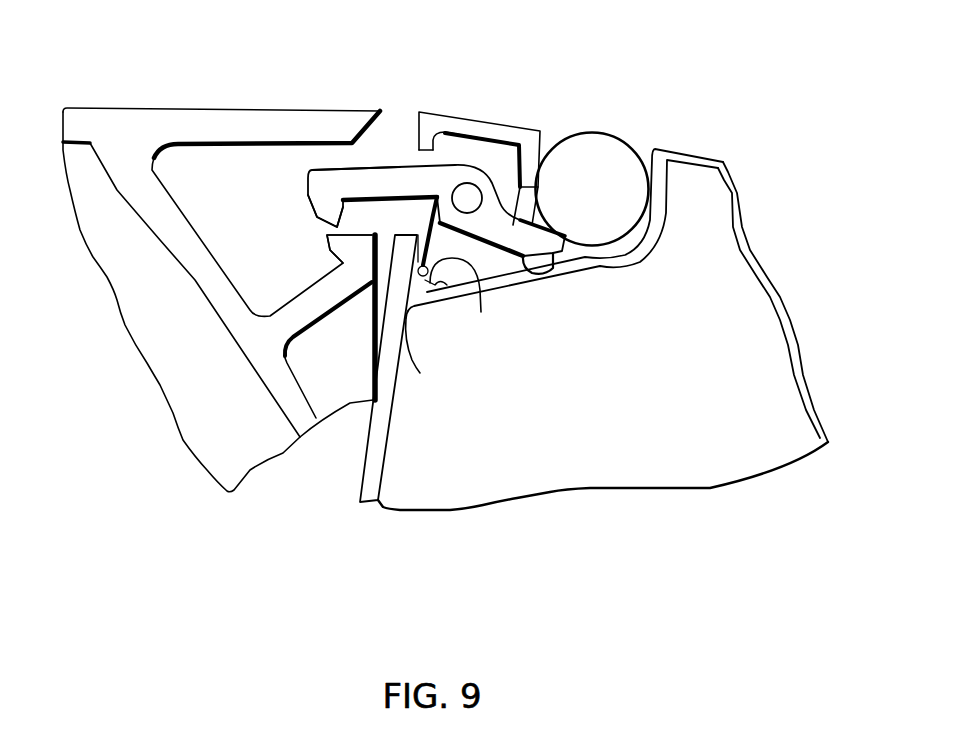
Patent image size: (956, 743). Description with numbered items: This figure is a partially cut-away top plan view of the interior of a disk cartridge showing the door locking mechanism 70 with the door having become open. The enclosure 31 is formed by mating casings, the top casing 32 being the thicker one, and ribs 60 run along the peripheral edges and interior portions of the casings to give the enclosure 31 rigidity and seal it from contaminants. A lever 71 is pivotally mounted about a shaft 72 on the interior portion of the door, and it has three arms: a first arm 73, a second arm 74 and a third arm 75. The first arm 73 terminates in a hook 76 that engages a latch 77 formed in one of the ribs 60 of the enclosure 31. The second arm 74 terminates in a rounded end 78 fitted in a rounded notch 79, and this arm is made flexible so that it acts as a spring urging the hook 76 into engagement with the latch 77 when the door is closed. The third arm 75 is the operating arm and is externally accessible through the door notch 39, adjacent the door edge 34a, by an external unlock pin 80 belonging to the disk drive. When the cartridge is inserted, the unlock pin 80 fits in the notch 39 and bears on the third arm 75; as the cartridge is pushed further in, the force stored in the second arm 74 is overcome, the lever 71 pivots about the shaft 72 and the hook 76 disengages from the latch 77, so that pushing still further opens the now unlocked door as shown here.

The enclosure 31 is at (270, 480).
The top casing 32 is at (234, 108).
The panel edge 34a is at (786, 312).
The door notch 39 is at (657, 149).
The ribs 60 is at (322, 300).
The door locking mechanism 70 is at (445, 85).
The lever 71 is at (391, 155).
The shaft 72 is at (470, 183).
The first arm 73 is at (307, 197).
The second arm 74 is at (463, 299).
The third arm 75 is at (522, 263).
The hook 76 is at (331, 197).
The latch 77 is at (334, 248).
The rounded end 78 is at (423, 361).
The rounded notch 79 is at (440, 290).
The external unlock pin 80 is at (620, 132).